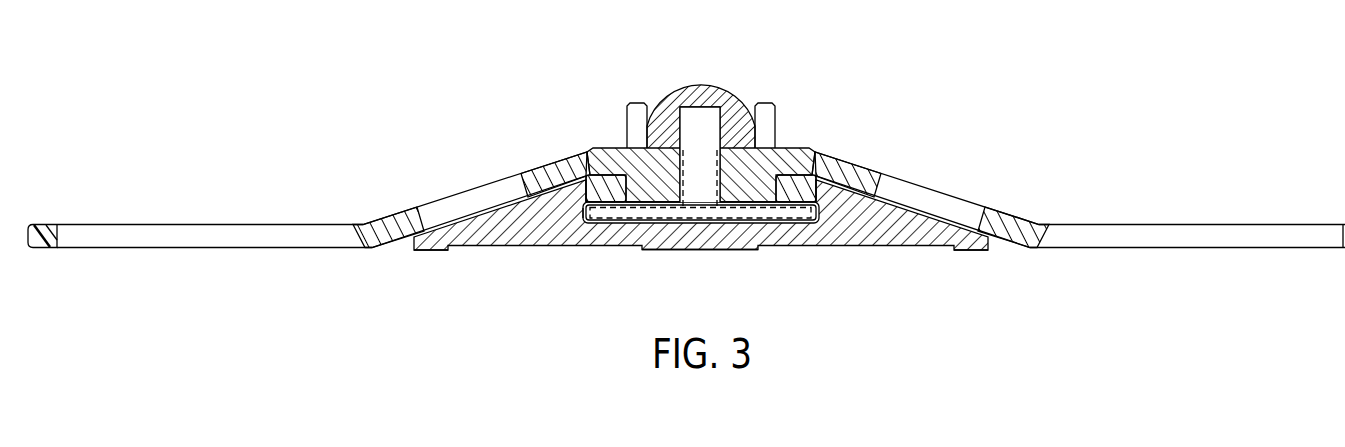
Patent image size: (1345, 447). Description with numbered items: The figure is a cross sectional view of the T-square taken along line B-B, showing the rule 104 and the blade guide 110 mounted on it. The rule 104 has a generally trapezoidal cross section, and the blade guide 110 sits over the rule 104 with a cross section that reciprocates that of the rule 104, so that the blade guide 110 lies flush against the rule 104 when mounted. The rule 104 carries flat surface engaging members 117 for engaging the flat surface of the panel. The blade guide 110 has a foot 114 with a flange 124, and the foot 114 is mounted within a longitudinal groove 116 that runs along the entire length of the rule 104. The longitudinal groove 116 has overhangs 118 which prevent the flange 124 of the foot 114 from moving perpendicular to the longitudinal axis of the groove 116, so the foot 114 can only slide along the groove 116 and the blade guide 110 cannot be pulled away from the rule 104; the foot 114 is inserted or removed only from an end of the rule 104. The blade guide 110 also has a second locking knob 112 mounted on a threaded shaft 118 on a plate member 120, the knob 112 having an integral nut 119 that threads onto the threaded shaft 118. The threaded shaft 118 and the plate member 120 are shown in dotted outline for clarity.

The rule 104 is at (512, 247).
The blade guide 110 is at (686, 229).
The second locking knob 112 is at (763, 103).
The foot 114 is at (752, 190).
The longitudinal groove 116 is at (581, 232).
The flat surface engaging members 117 is at (425, 250).
The overhangs / threaded shaft 118 is at (702, 127).
The integral nut 119 is at (677, 117).
The plate member 120 is at (775, 222).
The flange 124 is at (815, 222).